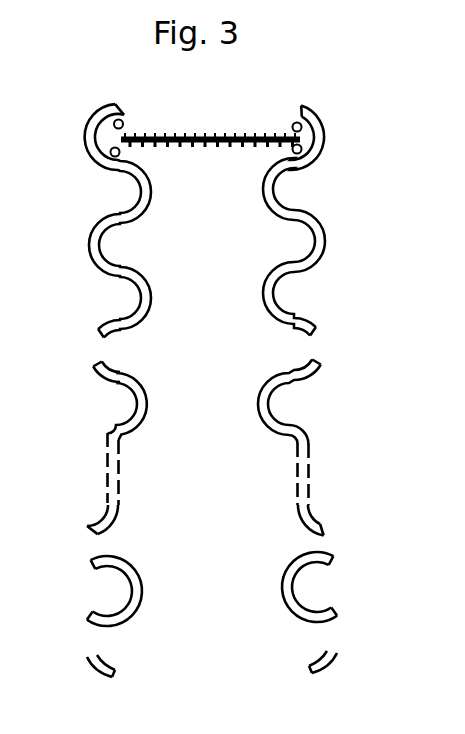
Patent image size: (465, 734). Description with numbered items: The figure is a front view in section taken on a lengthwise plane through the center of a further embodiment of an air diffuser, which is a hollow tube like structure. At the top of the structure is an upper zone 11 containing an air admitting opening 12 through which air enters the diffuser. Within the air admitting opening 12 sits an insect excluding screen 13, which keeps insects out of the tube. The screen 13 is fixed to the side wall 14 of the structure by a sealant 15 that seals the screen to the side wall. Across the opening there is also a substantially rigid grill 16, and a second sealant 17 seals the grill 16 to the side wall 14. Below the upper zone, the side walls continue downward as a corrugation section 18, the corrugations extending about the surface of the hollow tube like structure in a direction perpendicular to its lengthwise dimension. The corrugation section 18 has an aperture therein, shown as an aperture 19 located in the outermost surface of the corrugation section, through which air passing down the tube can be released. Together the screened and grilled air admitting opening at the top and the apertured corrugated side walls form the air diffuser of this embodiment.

The upper zone 11 is at (337, 381).
The air admitting opening 12 is at (170, 112).
The insect excluding screen 13 is at (190, 133).
The side wall 14 is at (303, 162).
The sealant 15 is at (114, 122).
The substantially rigid grill 16 is at (226, 146).
The sealant 17 is at (110, 152).
The corrugation section 18 is at (316, 328).
The aperture 19 is at (317, 345).